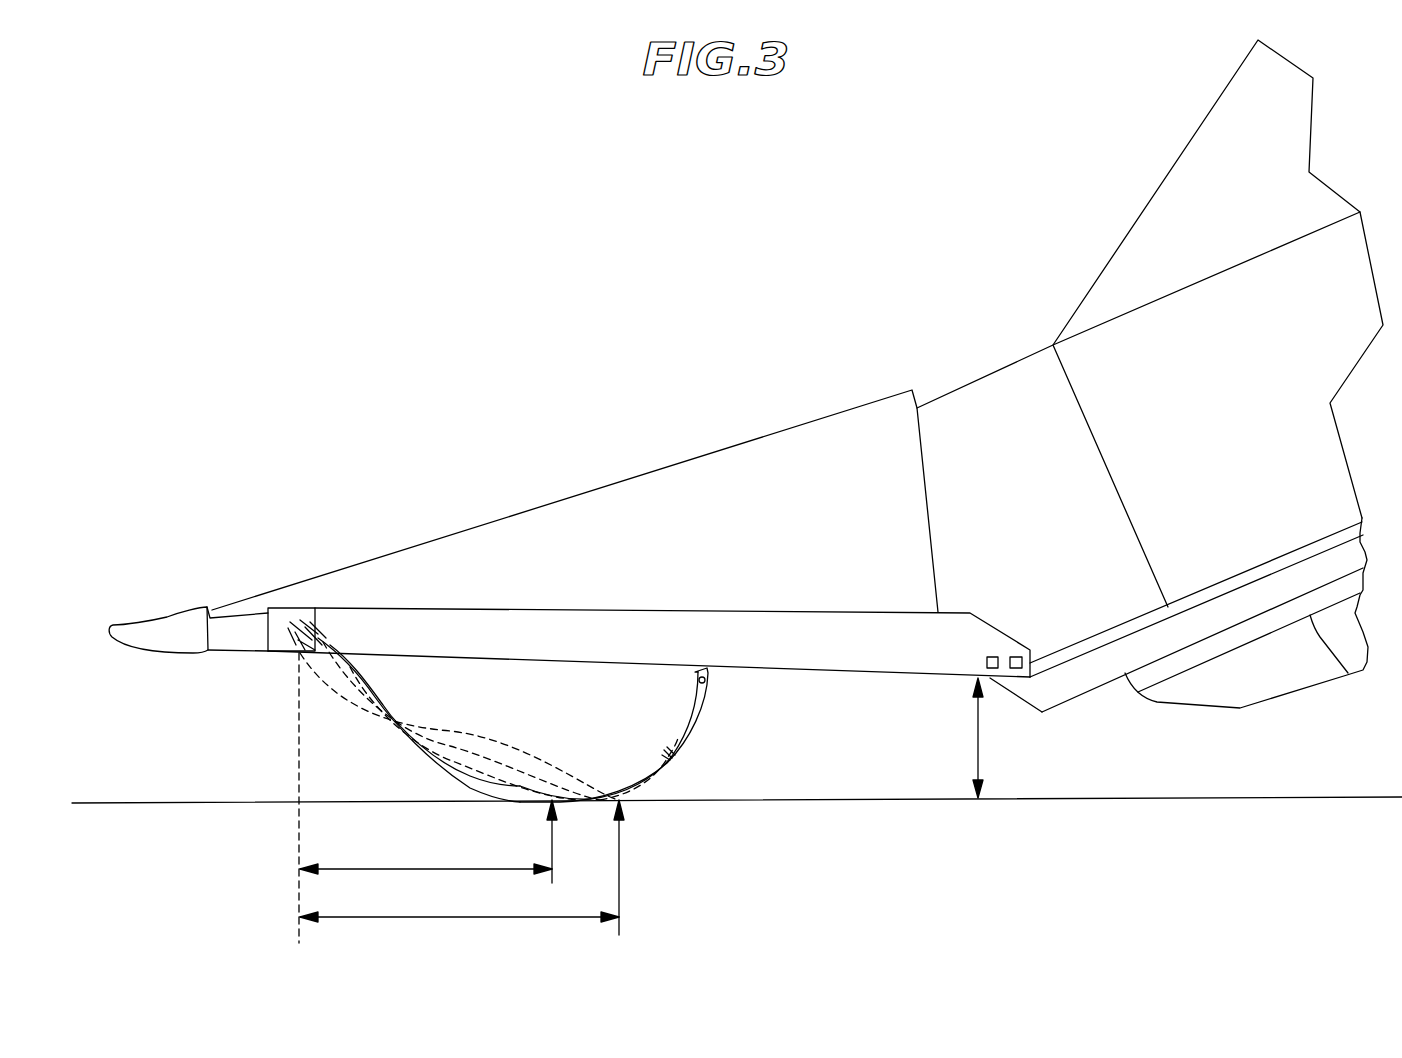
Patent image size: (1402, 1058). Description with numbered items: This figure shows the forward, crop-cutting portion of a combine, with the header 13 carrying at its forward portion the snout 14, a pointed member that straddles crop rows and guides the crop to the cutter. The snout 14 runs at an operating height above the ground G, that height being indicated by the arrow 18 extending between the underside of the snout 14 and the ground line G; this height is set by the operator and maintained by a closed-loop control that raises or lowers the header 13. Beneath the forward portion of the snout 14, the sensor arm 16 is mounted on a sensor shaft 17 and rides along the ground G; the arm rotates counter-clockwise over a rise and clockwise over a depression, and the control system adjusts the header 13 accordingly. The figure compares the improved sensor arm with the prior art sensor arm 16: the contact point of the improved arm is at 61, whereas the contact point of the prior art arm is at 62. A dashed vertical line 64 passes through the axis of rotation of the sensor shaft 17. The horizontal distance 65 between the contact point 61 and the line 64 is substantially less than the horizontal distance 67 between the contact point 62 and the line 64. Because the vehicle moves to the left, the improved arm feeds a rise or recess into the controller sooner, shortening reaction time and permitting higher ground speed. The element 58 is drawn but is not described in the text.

The header 13 is at (1130, 195).
The snout 14 is at (557, 482).
The sensor arm 16 is at (447, 722).
The sensor shaft 17 is at (292, 637).
The ground engaging tine 58 is at (712, 713).
The operating height 18 is at (977, 738).
The contact point of improved sensor arm 61 is at (552, 838).
The contact point of prior art sensor arm 62 is at (619, 850).
The vertical line through sensor shaft axis 64 is at (300, 767).
The horizontal distance for improved sensor arm 65 is at (398, 867).
The horizontal distance for prior art sensor arm 67 is at (452, 913).
The ground G is at (793, 800).